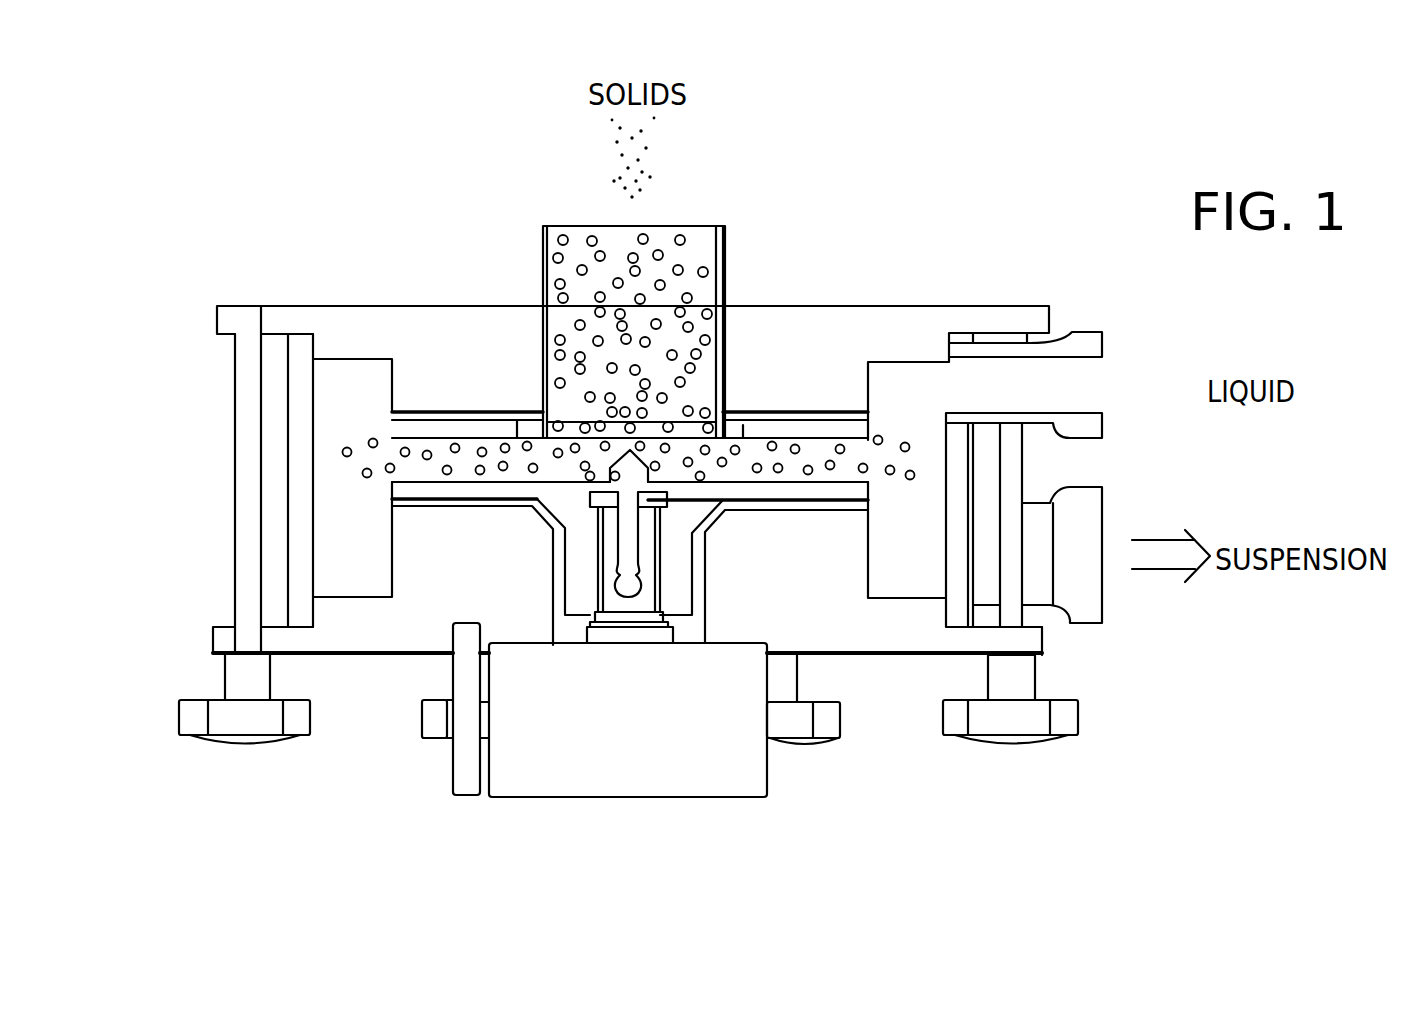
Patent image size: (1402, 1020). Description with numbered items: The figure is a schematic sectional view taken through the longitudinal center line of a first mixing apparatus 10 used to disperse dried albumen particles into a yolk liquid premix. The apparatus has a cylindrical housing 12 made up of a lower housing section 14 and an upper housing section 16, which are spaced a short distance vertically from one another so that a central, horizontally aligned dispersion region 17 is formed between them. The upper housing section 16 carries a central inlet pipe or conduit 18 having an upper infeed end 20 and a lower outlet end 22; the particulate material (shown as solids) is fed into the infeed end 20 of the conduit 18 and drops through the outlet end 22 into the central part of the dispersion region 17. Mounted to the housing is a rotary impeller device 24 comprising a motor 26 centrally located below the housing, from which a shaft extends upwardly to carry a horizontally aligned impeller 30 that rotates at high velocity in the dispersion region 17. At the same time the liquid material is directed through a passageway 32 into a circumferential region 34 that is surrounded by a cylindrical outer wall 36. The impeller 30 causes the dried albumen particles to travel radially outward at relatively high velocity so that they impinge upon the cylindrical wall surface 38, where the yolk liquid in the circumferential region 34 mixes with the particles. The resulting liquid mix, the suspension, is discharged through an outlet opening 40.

The mixing apparatus 10 is at (843, 245).
The cylindrical housing 12 is at (945, 306).
The lower housing section 14 is at (868, 313).
The upper housing section 16 is at (887, 645).
The dispersion region 17 is at (540, 578).
The inlet pipe or conduit 18 is at (727, 262).
The upper infeed end 20 is at (585, 226).
The lower outlet end 22 is at (568, 428).
The rotary impeller device 24 is at (433, 505).
The motor 26 is at (765, 777).
The impeller 30 is at (482, 427).
The passageway 32 is at (1097, 373).
The circumferential region 34 is at (330, 422).
The cylindrical outer wall 36 is at (295, 473).
The cylindrical wall surface 38 is at (313, 508).
The outlet opening 40 is at (1105, 545).